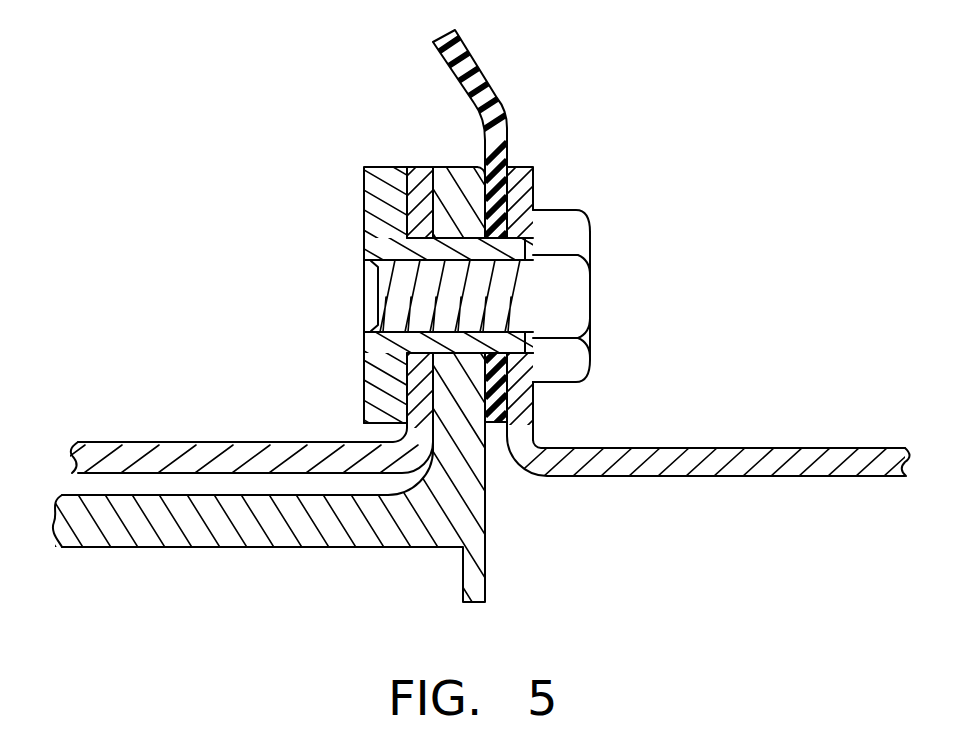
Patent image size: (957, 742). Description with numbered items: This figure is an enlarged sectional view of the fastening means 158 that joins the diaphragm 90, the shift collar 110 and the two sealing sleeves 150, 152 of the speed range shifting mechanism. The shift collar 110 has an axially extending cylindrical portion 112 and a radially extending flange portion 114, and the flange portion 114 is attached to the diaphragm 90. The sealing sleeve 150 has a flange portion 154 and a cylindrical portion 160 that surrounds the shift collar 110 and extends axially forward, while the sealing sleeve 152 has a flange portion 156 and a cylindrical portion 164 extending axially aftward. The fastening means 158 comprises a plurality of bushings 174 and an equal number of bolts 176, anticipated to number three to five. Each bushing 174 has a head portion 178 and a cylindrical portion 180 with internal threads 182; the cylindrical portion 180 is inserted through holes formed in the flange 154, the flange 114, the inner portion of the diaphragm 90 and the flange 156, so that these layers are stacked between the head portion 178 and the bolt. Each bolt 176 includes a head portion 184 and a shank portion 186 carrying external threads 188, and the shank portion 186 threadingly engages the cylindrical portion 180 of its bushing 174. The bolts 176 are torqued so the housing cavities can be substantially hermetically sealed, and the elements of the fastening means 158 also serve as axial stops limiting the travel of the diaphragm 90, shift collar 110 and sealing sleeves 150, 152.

The diaphragm 90 is at (482, 62).
The shift collar 110 is at (178, 548).
The cylindrical portion 112 is at (278, 537).
The flange portion 114 is at (453, 173).
The sealing sleeve 150 is at (127, 443).
The sealing sleeve 152 is at (678, 447).
The flange portion 154 is at (422, 180).
The flange portion 156 is at (528, 167).
The fastening means 158 is at (340, 175).
The cylindrical portion 160 is at (202, 452).
The cylindrical portion 164 is at (812, 457).
The bushing 174 is at (363, 238).
The bolt 176 is at (565, 220).
The head portion 178 is at (373, 397).
The cylindrical portion 180 is at (512, 355).
The internal threads 182 is at (398, 318).
The head portion 184 is at (567, 277).
The shank portion 186 is at (412, 277).
The external threads 188 is at (380, 340).